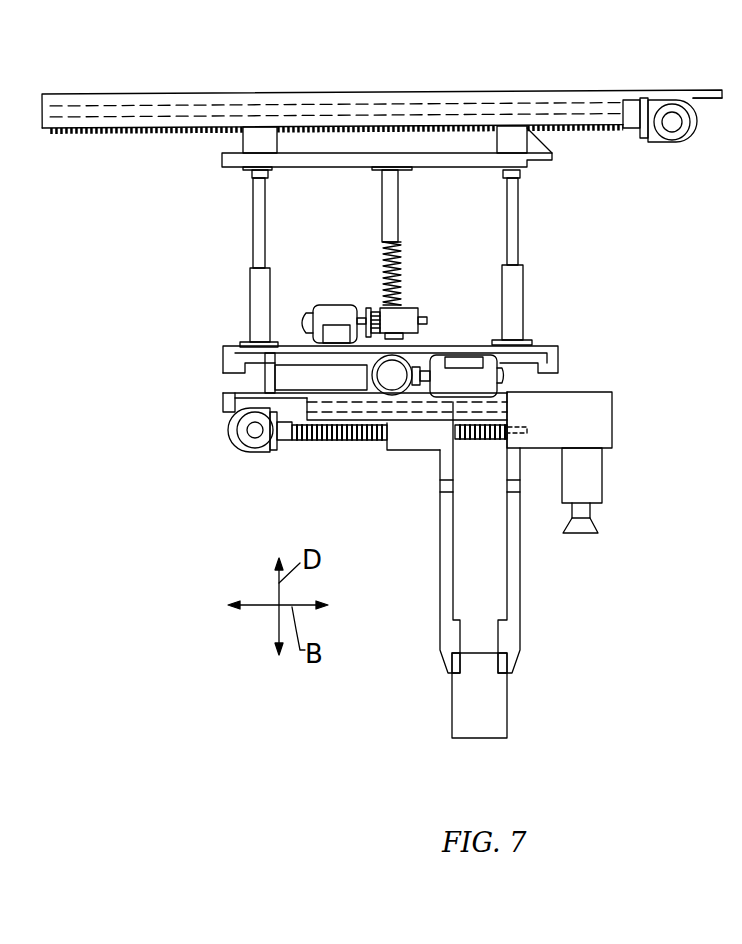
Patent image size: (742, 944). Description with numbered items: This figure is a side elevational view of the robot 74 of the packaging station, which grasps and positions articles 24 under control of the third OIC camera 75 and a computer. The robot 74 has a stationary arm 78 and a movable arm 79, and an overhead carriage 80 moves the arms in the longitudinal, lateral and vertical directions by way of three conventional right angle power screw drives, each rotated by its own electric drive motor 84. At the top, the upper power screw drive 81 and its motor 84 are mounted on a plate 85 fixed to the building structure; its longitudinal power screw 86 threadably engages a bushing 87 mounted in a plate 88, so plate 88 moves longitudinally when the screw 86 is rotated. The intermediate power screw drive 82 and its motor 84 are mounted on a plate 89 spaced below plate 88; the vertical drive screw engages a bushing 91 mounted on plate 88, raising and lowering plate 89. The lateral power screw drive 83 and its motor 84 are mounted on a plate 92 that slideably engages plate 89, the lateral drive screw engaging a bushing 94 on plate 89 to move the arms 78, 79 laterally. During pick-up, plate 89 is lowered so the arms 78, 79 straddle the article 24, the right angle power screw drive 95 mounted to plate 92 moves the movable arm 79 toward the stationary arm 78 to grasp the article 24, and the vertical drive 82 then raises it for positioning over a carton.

The article 24 is at (507, 710).
The robot 74 is at (612, 420).
The third OIC camera 75 is at (602, 480).
The stationary arm 78 is at (520, 590).
The movable arm 79 is at (440, 590).
The overhead carriage 80 is at (197, 108).
The upper power screw drive 81 is at (158, 136).
The intermediate power screw drive 82 is at (397, 287).
The lateral power screw drive 83 is at (413, 367).
The electric drive motor 84 is at (683, 138).
The plate 85 is at (323, 93).
The longitudinal power screw 86 is at (100, 137).
The bushing 87 is at (552, 153).
The plate 88 is at (345, 168).
The plate 89 is at (223, 350).
The bushing 91 is at (409, 204).
The plate 92 is at (225, 400).
The bushing 94 is at (367, 376).
The right angle power screw drive 95 is at (348, 438).